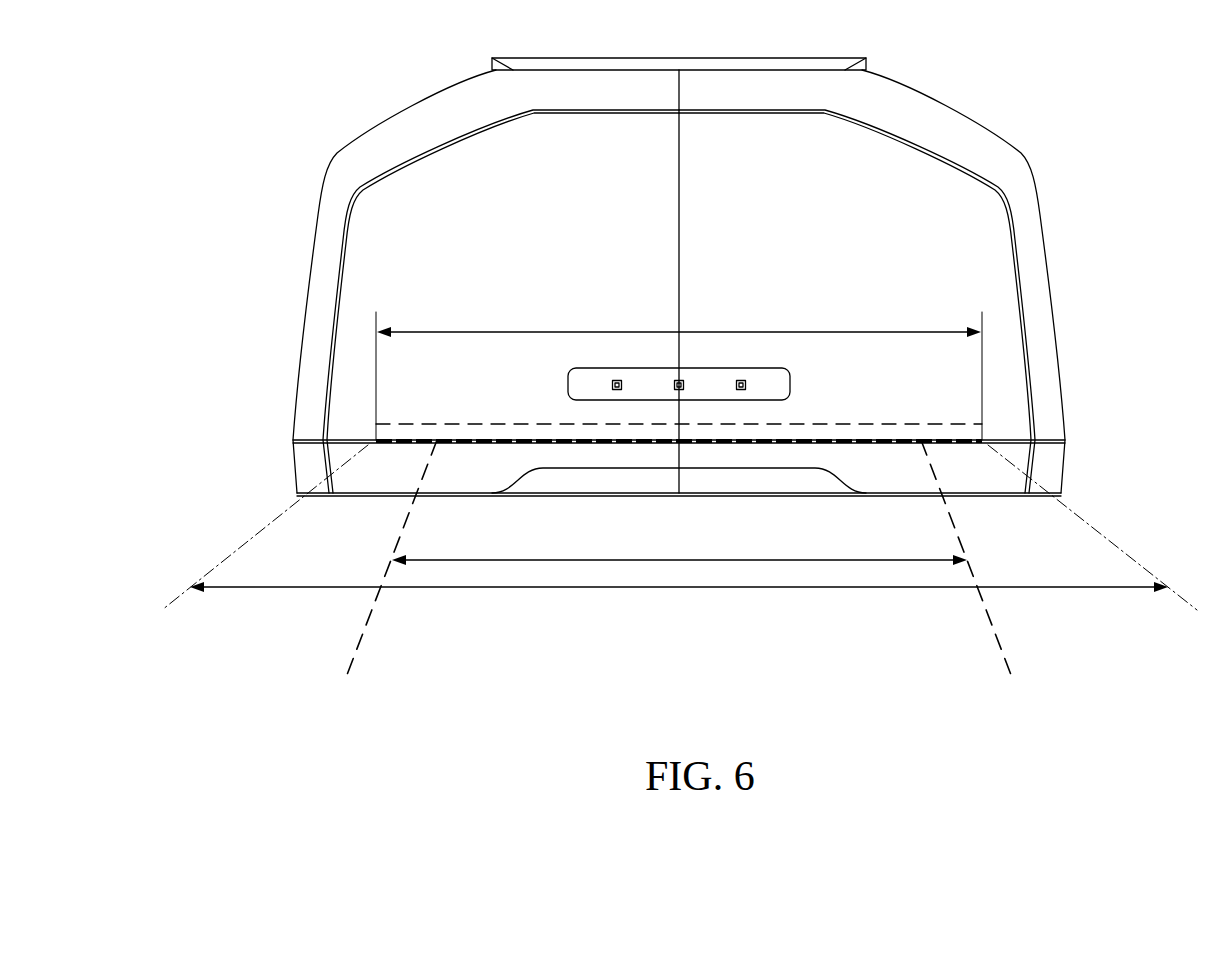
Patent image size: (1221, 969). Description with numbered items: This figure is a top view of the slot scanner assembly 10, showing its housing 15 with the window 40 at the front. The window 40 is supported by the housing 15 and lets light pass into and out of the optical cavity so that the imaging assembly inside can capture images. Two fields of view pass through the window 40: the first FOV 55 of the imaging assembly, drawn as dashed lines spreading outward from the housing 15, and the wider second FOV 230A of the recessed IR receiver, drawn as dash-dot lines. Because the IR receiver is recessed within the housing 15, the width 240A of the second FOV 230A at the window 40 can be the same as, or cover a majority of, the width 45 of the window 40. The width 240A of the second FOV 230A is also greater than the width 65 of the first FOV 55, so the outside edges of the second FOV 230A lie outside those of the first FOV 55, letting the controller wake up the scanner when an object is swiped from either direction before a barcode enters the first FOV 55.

The slot scanner assembly 10 is at (303, 51).
The housing 15 is at (337, 153).
The window 40 is at (493, 436).
The width of window 45 is at (758, 330).
The first FOV 55 is at (352, 662).
The width of first FOV 65 is at (646, 558).
The second FOV 230A is at (1117, 546).
The width of second FOV 240A is at (675, 589).